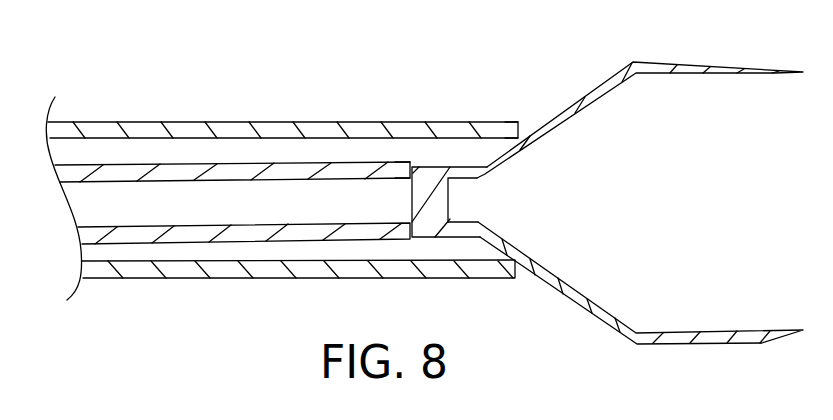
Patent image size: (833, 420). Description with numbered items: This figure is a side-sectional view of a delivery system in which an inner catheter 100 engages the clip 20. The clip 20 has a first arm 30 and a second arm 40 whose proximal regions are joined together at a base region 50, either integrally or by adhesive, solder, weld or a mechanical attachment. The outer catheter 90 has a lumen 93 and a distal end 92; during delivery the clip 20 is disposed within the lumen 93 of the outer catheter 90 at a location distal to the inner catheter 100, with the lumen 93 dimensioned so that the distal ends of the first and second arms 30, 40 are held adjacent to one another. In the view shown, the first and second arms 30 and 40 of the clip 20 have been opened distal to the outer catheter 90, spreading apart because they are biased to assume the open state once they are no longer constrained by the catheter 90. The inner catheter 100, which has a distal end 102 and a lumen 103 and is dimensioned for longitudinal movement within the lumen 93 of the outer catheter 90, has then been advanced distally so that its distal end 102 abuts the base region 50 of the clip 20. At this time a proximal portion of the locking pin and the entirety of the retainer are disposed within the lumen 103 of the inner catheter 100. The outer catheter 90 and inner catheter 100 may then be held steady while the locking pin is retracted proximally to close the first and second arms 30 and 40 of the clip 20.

The clip 20 is at (592, 76).
The first arm 30 is at (579, 115).
The second arm 40 is at (583, 298).
The base region 50 is at (432, 177).
The outer catheter 90 is at (267, 122).
The distal end of the catheter 92 is at (522, 120).
The lumen of the catheter 93 is at (102, 150).
The inner catheter 100 is at (193, 167).
The distal end of the inner catheter 102 is at (413, 160).
The lumen of the inner catheter 103 is at (160, 210).